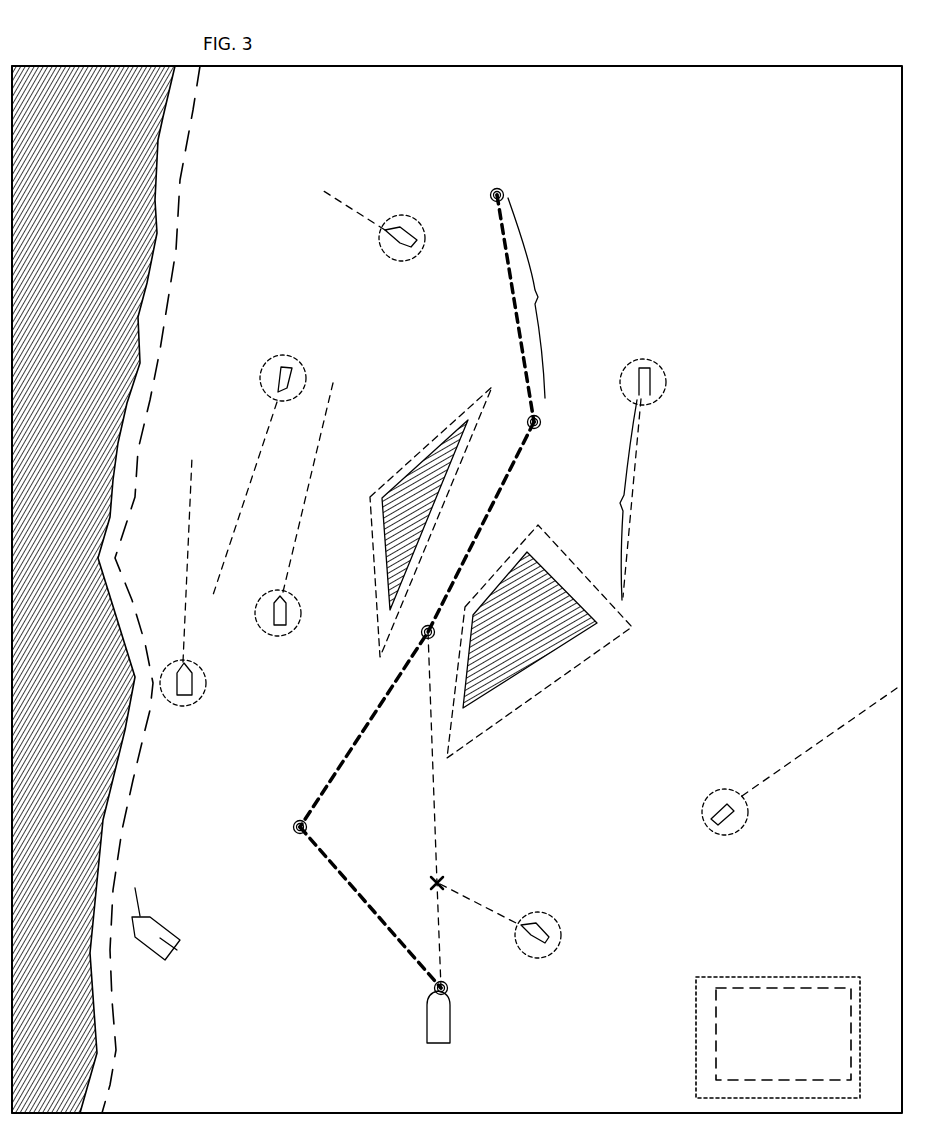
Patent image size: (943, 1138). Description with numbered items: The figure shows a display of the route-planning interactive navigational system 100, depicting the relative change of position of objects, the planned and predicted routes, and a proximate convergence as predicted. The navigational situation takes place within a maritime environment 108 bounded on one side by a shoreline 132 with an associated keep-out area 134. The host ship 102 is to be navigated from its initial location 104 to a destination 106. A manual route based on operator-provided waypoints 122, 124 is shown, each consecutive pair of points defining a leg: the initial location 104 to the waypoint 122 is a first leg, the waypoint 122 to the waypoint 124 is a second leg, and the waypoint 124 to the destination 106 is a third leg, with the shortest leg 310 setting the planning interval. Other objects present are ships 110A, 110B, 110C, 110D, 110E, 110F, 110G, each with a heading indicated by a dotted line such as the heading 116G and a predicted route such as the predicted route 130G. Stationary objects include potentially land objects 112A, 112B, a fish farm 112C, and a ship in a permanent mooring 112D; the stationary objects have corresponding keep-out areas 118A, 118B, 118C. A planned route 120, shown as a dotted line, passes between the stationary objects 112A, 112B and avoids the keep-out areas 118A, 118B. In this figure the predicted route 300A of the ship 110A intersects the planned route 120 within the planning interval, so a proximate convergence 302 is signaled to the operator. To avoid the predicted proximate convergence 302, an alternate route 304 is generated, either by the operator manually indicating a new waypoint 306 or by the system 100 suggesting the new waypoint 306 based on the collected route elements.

The route-planning interactive navigational system 100 is at (762, 46).
The environment 108 is at (822, 174).
The shoreline 132 is at (93, 589).
The keep-out area 134 is at (115, 1012).
The destination 106 is at (504, 192).
The leg 310 is at (537, 308).
The waypoint 124 is at (538, 417).
The waypoint 122 is at (422, 637).
The new waypoint 306 is at (293, 829).
The alternate route 304 is at (328, 856).
The initial location 104 is at (448, 990).
The host ship 102 is at (435, 1022).
The planned route 120 is at (437, 810).
The proximate convergence 302 is at (440, 878).
The predicted route 300A is at (478, 902).
The ship 110A is at (540, 940).
The ship 110B is at (726, 816).
The ship 110C is at (190, 690).
The ship 110D is at (278, 626).
The ship 110E is at (284, 372).
The ship 110F is at (405, 245).
The ship 110G is at (647, 388).
The heading 116G is at (640, 458).
The predicted route 130G is at (602, 500).
The keep-out area 118A is at (470, 422).
The stationary object 112A is at (412, 510).
The keep-out area 118B is at (620, 614).
The stationary object 112B is at (495, 672).
The stationary object 112D is at (177, 946).
The keep-out area 118C is at (696, 1060).
The stationary object 112C is at (716, 1023).